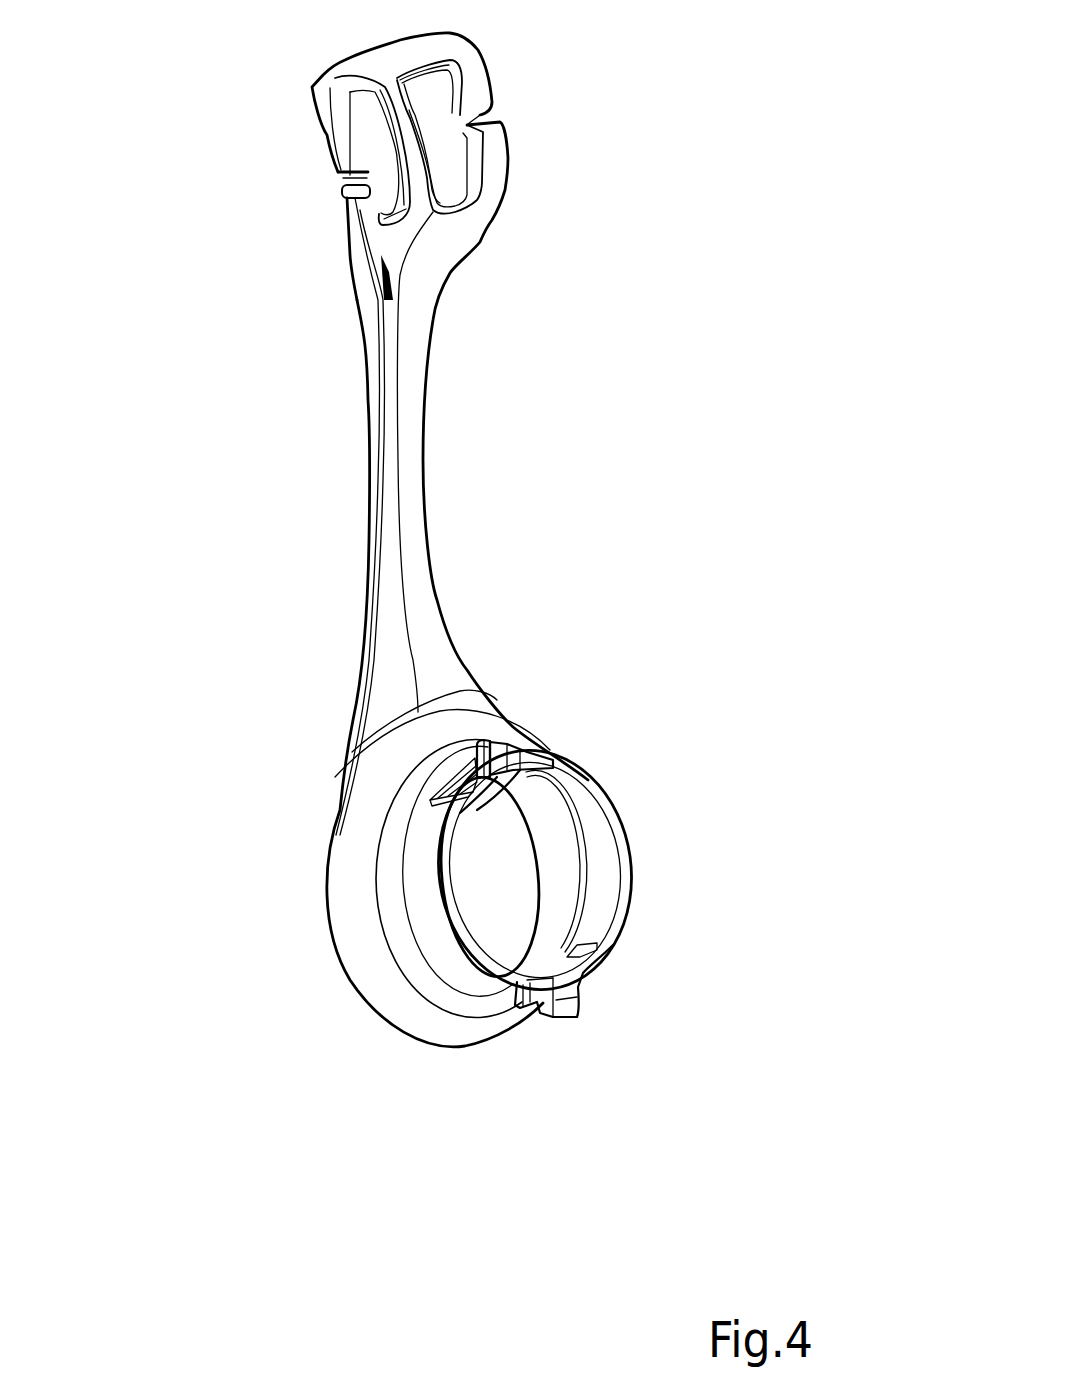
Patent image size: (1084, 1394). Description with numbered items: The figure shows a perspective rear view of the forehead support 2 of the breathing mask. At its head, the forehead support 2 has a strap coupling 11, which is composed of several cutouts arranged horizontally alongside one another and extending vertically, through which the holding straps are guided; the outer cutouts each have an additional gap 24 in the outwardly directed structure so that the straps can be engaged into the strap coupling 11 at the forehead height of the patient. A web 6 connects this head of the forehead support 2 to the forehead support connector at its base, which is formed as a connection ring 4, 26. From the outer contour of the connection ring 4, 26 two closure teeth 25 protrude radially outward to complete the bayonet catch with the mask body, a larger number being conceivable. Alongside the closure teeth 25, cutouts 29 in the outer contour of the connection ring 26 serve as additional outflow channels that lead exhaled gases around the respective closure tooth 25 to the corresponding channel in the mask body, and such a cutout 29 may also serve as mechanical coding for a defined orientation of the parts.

The forehead support 2 is at (355, 585).
The connection ring 4 is at (413, 898).
The web 6 is at (413, 460).
The strap coupling 11 is at (418, 160).
The gap 24 is at (490, 113).
The closure tooth 25 is at (557, 751).
The connection ring 26 is at (509, 876).
The cutout 29 is at (477, 780).